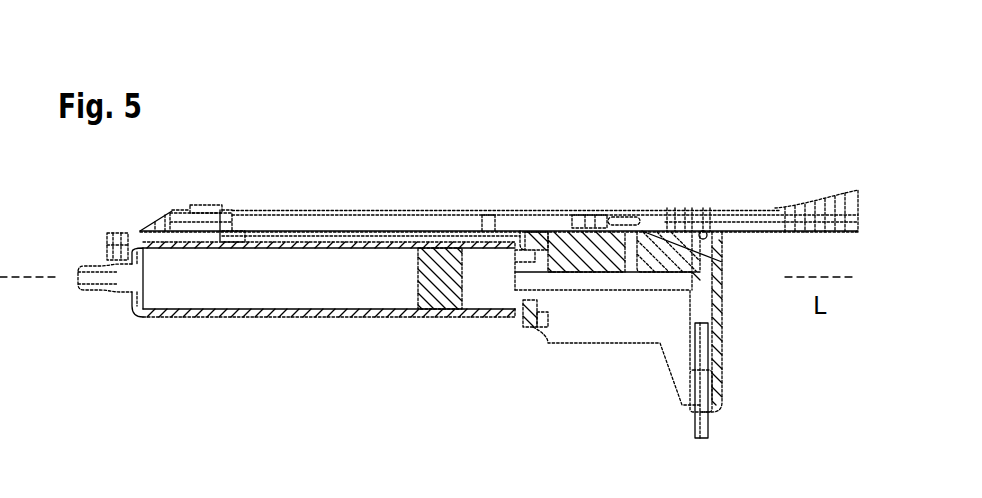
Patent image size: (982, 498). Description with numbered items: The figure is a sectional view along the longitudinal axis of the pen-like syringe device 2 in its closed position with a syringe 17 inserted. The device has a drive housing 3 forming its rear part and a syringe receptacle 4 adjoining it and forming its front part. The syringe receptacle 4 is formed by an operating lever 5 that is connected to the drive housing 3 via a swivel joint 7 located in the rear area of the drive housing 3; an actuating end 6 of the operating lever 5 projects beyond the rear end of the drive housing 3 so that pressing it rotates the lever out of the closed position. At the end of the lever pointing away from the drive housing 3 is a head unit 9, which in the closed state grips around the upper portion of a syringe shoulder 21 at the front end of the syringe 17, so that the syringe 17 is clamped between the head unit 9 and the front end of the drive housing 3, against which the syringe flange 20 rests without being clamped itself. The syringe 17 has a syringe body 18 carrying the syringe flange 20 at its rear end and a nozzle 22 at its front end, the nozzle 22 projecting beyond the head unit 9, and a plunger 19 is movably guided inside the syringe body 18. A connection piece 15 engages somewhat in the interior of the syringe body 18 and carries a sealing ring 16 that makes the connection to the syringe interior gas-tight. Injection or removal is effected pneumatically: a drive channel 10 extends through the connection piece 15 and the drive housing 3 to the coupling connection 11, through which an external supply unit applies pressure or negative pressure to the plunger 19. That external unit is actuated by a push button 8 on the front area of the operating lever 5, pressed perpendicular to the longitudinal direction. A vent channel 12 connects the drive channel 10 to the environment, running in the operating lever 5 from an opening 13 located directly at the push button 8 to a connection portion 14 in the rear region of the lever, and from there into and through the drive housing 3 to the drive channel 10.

The pen-like syringe device 2 is at (786, 88).
The drive housing 3 is at (632, 327).
The syringe receptacle 4 is at (353, 148).
The operating lever 5 is at (455, 215).
The actuating end 6 is at (828, 200).
The swivel joint 7 is at (706, 230).
The push button 8 is at (192, 205).
The head unit 9 is at (128, 257).
The drive channel 10 is at (558, 275).
The coupling connection 11 is at (693, 418).
The vent channel 12 is at (306, 213).
The opening 13 is at (224, 207).
The connection portion 14 is at (592, 215).
The connection piece 15 is at (512, 297).
The sealing ring 16 is at (526, 310).
The syringe 17 is at (308, 342).
The syringe body 18 is at (229, 313).
The plunger 19 is at (430, 290).
The syringe flange 20 is at (531, 328).
The syringe shoulder 21 is at (127, 312).
The nozzle 22 is at (78, 268).